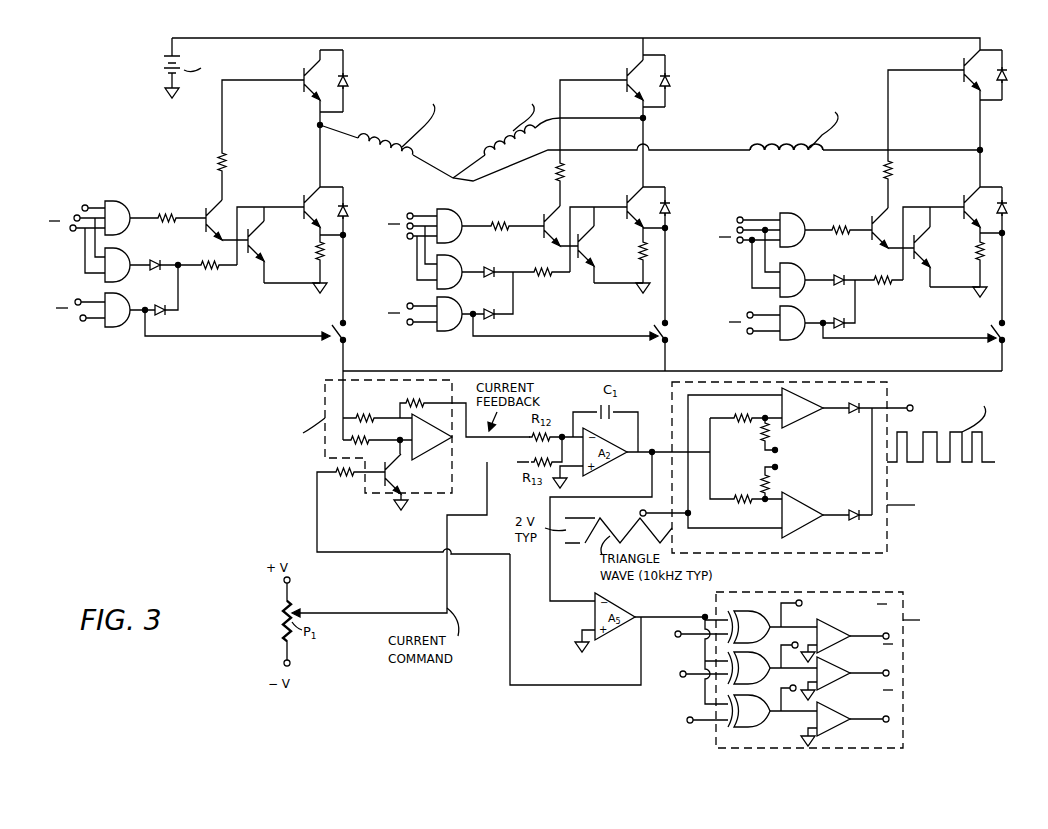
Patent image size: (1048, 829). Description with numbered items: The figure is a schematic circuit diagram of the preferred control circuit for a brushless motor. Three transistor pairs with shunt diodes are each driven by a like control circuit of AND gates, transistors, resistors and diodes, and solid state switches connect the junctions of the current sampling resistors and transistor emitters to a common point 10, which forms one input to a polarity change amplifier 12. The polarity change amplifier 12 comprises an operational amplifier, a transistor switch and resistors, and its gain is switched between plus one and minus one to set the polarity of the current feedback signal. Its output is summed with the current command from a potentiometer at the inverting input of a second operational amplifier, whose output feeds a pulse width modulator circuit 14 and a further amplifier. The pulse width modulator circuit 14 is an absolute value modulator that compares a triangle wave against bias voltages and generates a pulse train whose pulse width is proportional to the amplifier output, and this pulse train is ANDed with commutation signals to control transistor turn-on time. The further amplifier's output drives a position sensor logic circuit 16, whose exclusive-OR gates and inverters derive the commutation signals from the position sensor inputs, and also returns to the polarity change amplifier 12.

The common point 10 is at (343, 370).
The polarity change amplifier 12 is at (325, 388).
The pulse width modulator circuit 14 is at (762, 555).
The position sensor logic circuit 16 is at (832, 592).